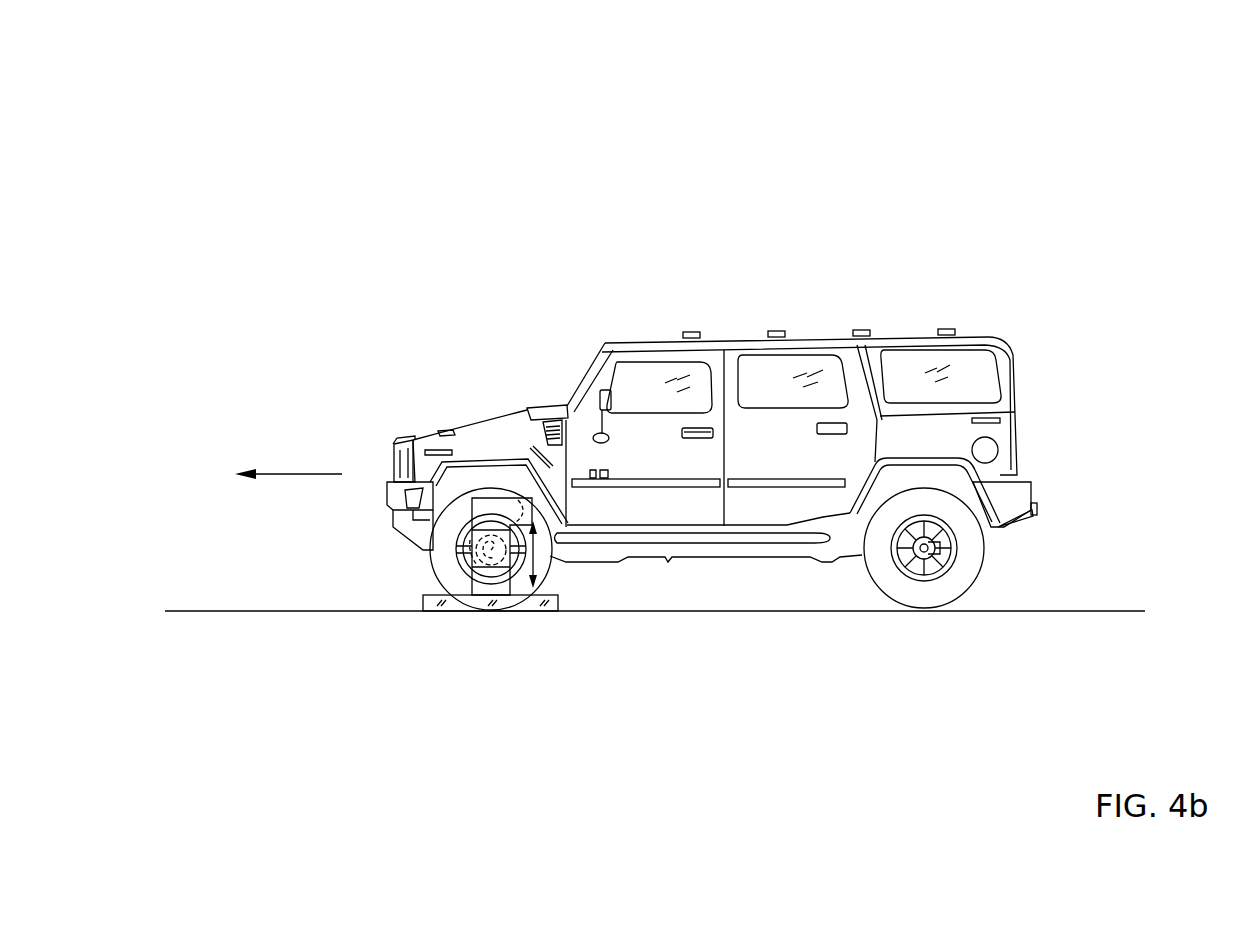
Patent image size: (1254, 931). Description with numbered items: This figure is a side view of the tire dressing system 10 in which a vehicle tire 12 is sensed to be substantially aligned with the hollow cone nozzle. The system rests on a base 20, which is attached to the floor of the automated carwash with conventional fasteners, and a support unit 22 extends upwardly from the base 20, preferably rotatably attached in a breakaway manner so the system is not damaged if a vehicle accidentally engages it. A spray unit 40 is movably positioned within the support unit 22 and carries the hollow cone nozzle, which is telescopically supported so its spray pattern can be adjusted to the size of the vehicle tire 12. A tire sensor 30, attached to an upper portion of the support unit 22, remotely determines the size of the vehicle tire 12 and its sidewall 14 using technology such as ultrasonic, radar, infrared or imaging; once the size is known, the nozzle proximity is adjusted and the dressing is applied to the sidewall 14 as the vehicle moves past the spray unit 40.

The tire dressing system 10 is at (232, 115).
The vehicle tire 12 is at (555, 558).
The sidewall 14 is at (441, 553).
The base 20 is at (519, 610).
The support unit 22 is at (477, 592).
The tire sensor 30 is at (500, 498).
The spray unit 40 is at (455, 551).